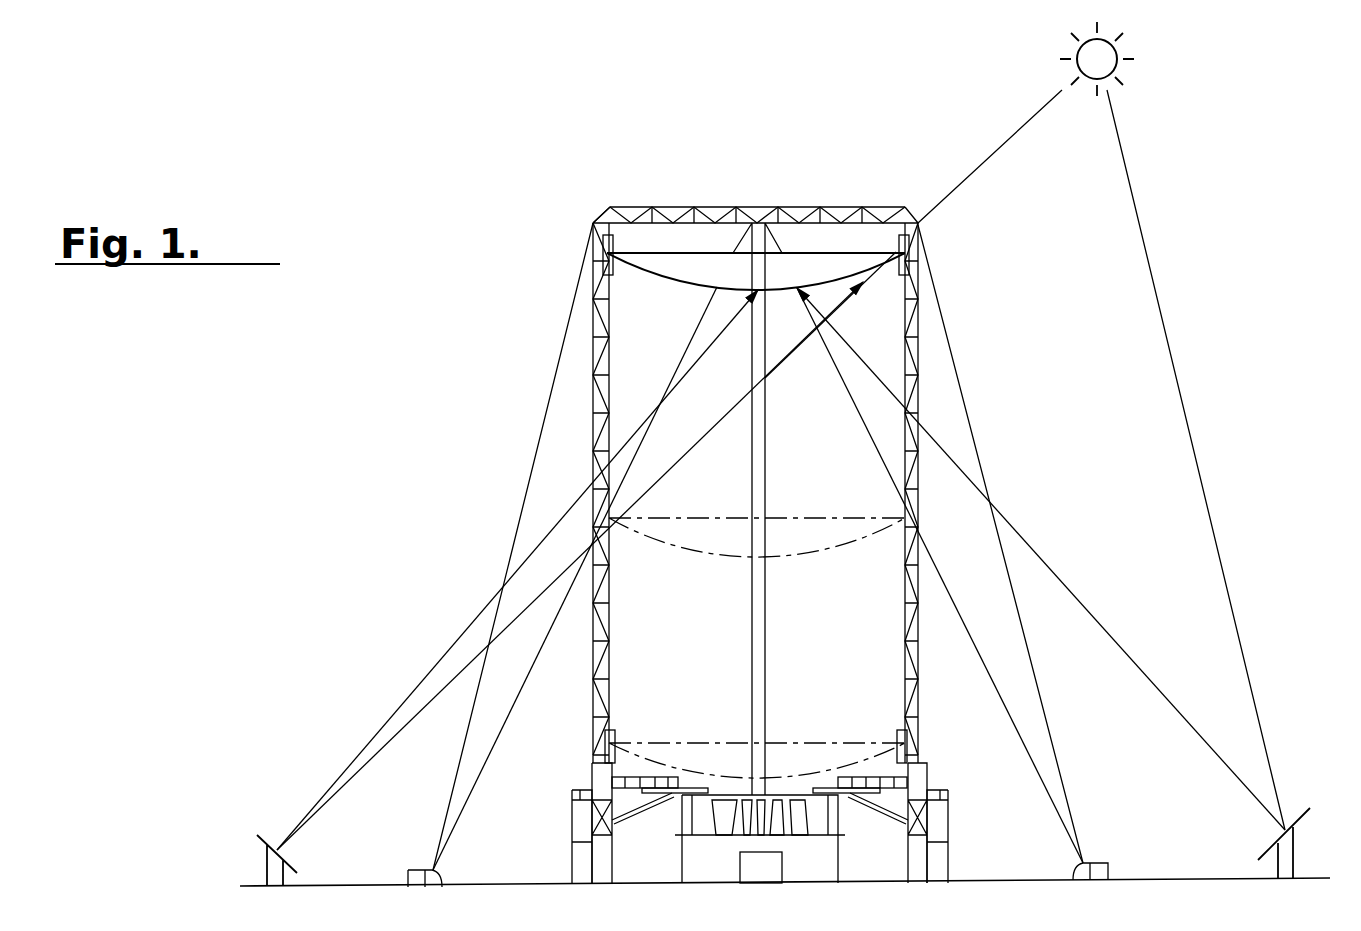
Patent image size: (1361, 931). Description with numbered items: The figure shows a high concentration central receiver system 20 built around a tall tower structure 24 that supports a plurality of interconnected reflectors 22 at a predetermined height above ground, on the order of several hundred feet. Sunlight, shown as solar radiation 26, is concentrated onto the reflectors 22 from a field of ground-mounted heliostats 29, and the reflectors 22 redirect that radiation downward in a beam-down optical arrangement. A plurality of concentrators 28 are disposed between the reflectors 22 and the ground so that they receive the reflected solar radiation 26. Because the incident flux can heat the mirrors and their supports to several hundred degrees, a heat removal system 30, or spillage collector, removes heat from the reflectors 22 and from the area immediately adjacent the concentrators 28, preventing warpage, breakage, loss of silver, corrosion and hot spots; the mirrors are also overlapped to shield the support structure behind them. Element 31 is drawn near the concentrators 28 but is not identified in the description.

The high concentration central receiver system 20 is at (683, 182).
The reflectors 22 is at (848, 277).
The tower structure 24 is at (917, 372).
The solar radiation 26 is at (543, 592).
The concentrators 28 is at (738, 827).
The heliostats 29 is at (268, 832).
The heat removal system 30 is at (847, 797).
The left support platform 31 is at (668, 797).